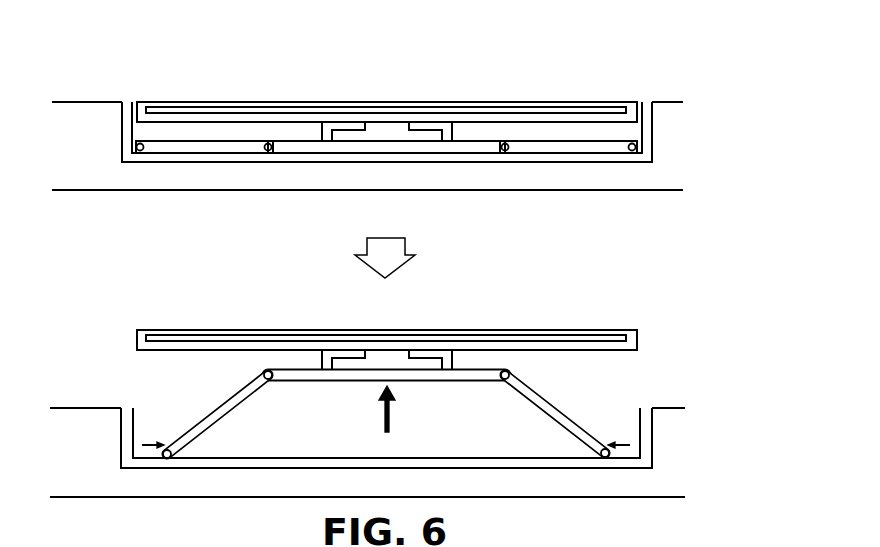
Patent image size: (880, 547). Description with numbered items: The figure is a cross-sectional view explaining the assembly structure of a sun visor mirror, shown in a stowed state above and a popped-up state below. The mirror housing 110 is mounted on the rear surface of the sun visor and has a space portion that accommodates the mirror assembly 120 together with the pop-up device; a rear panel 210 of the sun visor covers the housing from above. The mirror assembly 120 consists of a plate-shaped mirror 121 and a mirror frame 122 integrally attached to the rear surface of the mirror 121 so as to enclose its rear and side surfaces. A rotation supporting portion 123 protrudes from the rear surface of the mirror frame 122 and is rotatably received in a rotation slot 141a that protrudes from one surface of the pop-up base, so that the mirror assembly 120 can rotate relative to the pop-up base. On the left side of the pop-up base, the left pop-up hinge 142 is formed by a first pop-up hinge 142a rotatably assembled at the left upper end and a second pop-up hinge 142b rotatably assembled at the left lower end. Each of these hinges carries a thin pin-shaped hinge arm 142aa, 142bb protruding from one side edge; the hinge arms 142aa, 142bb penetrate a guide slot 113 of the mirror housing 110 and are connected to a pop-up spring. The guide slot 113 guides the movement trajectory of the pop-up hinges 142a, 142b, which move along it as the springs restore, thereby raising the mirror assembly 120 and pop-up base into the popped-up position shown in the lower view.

The mirror housing 110 is at (647, 103).
The guide slot 113 is at (182, 148).
The mirror assembly 120 is at (387, 181).
The mirror 121 is at (530, 103).
The mirror frame 122 is at (628, 103).
The rotation supporting portion 123 is at (387, 140).
The rotation slot 141a is at (421, 127).
The left pop-up hinge 142 is at (386, 297).
The first pop-up hinge 142a is at (217, 145).
The second pop-up hinge 142b is at (552, 145).
The hinge arm 142aa is at (143, 150).
The hinge arm 142bb is at (643, 163).
The rear panel 210 is at (668, 108).